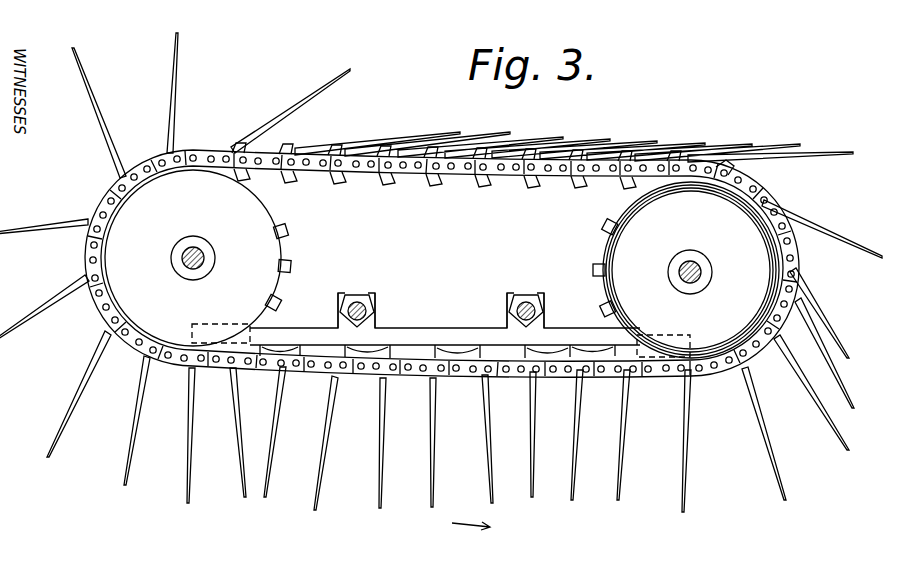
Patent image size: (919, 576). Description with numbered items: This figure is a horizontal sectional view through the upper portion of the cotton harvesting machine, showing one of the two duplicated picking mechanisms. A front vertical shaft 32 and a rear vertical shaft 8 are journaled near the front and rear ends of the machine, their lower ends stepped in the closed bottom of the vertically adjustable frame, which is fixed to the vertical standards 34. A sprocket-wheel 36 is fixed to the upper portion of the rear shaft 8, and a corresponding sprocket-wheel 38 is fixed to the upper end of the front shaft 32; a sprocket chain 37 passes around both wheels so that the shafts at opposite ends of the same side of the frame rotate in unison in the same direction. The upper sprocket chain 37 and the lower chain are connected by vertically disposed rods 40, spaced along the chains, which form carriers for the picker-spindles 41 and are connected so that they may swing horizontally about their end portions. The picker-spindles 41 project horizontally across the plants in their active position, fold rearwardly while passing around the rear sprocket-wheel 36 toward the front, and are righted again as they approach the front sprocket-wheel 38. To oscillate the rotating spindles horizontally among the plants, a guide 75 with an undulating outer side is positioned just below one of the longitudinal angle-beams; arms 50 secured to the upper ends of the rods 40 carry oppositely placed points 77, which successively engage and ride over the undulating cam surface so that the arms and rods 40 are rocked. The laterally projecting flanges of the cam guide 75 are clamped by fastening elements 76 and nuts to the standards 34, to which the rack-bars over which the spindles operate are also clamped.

The vertical shaft 8 is at (698, 274).
The vertical shaft 32 is at (187, 262).
The vertical standards 34 is at (338, 302).
The sprocket-wheel 36 is at (686, 270).
The sprocket chain 37 is at (533, 174).
The sprocket-wheel 38 is at (198, 258).
The vertical rods 40 is at (108, 315).
The teeth 41 is at (170, 121).
The arms 50 is at (513, 173).
The guide 75 is at (435, 337).
The bolt 76 is at (348, 295).
The points 77 is at (539, 142).